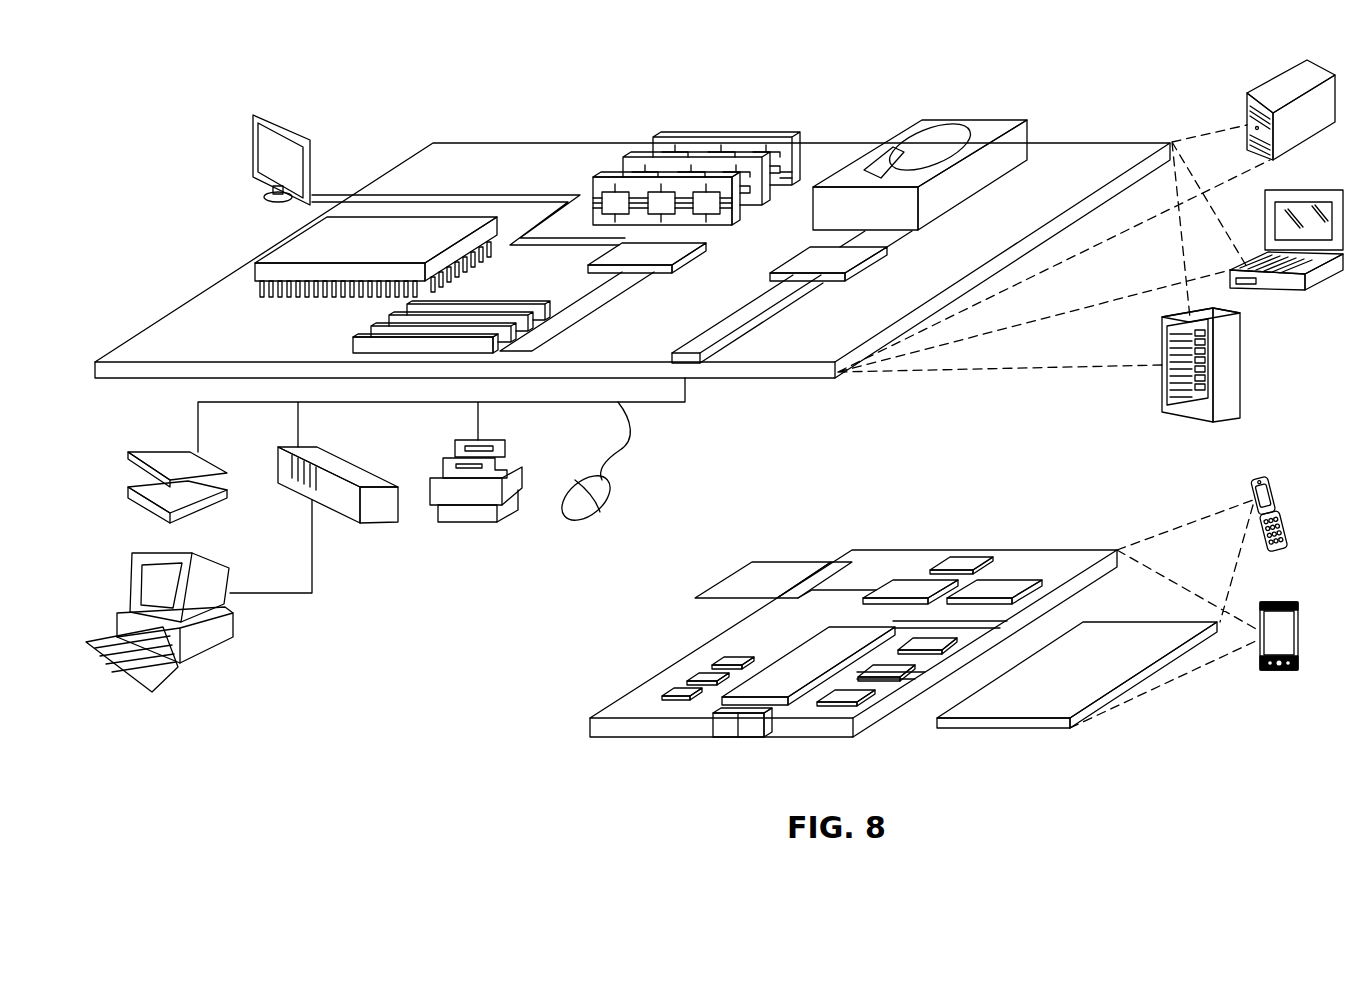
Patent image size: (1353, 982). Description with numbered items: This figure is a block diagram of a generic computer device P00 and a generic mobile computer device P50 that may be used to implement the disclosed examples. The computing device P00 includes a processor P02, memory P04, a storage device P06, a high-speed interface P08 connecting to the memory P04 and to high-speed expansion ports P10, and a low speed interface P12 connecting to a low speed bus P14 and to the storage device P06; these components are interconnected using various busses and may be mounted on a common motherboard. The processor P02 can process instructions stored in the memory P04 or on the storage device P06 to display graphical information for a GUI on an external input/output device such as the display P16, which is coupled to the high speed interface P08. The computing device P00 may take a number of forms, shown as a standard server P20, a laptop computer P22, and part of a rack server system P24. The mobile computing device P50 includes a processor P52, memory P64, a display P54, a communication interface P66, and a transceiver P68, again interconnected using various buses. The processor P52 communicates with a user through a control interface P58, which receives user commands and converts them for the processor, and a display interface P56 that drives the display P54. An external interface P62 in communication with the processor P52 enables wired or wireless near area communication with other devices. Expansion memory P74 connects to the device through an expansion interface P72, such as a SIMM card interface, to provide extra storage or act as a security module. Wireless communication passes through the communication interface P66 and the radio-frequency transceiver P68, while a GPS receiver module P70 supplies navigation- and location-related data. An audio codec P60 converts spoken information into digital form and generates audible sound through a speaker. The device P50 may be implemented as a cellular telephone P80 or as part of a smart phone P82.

The computing device P00 is at (381, 86).
The processor P02 is at (288, 246).
The memory P04 is at (730, 140).
The storage device P06 is at (962, 120).
The high-speed interface P08 is at (671, 256).
The high-speed expansion ports P10 is at (378, 322).
The low speed interface P12 is at (815, 252).
The low speed bus P14 is at (690, 350).
The display P16 is at (252, 114).
The standard server P20 is at (1262, 90).
The laptop computer P22 is at (1317, 190).
The rack server system P24 is at (1243, 365).
The mobile computer device P50 is at (1141, 740).
The processor P52 is at (778, 672).
The display P54 is at (1118, 600).
The display interface P56 is at (856, 697).
The control interface P58 is at (893, 670).
The audio codec P60 is at (932, 646).
The external interface P62 is at (738, 722).
The memory P64 is at (690, 690).
The communication interface P66 is at (912, 583).
The transceiver P68 is at (1000, 583).
The GPS receiver module P70 is at (962, 562).
The expansion interface P72 is at (836, 561).
The expansion memory P74 is at (751, 561).
The cellular telephone P80 is at (1258, 477).
The smart phone P82 is at (1276, 602).